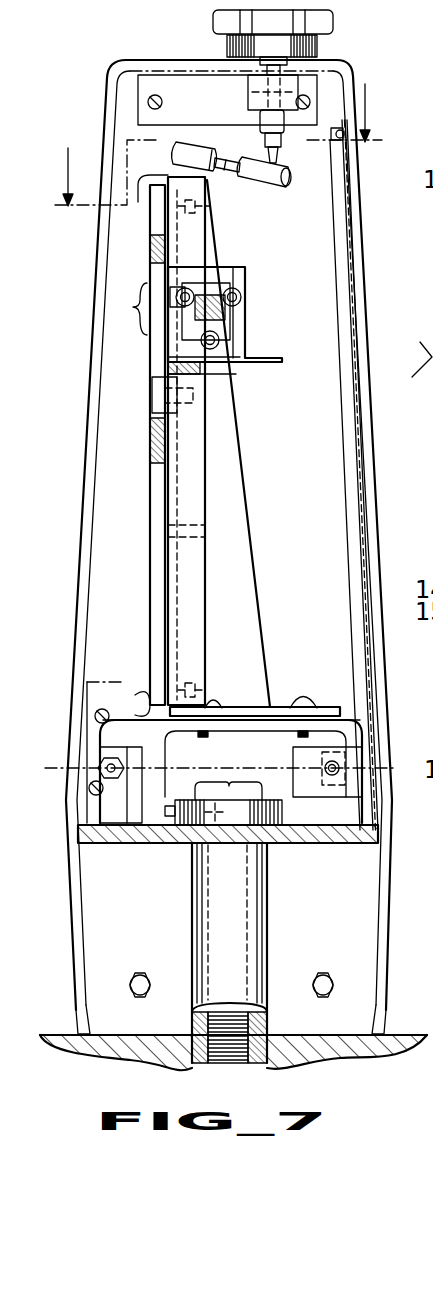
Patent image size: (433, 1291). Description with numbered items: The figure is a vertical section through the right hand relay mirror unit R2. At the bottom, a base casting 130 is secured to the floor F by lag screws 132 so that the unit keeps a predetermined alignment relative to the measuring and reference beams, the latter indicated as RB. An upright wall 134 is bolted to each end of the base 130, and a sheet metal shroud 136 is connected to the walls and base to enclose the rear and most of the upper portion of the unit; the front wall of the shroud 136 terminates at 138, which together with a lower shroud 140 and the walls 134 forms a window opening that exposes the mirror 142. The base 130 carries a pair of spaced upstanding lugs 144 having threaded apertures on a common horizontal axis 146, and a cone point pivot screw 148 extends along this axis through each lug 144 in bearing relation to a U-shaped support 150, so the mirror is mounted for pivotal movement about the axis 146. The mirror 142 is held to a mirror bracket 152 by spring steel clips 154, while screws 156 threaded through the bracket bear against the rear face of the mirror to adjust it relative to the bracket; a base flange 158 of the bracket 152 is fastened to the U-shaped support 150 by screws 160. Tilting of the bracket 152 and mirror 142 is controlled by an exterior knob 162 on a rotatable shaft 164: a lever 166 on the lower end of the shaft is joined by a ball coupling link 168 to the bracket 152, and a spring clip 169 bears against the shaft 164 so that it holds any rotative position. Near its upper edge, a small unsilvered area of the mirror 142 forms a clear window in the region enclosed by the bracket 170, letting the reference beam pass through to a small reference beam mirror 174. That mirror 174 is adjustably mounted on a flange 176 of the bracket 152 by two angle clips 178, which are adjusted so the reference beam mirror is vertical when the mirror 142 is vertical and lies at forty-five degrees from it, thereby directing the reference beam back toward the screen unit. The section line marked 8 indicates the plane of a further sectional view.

The relay mirror unit R2 is at (122, 60).
The exterior knob 162 is at (333, 23).
The front wall termination of shroud 138 is at (110, 202).
The sheet metal shroud 136 is at (350, 216).
The upright wall 134 is at (325, 541).
The section line 8- 8 is at (219, 145).
The rotatable shaft 164 is at (257, 92).
The spring clip 169 is at (250, 97).
The lever 166 is at (262, 153).
The ball coupling link 168 is at (275, 187).
The spring steel clips 154 is at (148, 200).
The mirror 142 is at (156, 598).
The mirror bracket 152 is at (233, 448).
The screws 156 is at (205, 206).
The angle clips 178 is at (225, 268).
The reference beam mirror 174 is at (222, 324).
The bracket 170 is at (133, 307).
The flange 176 is at (232, 373).
The direction arrow RB is at (414, 378).
The base flange 158 is at (342, 711).
The screws 160 is at (209, 708).
The U-shaped support 150 is at (330, 724).
The lower shroud 140 is at (87, 690).
The horizontal axis 146 is at (60, 767).
The cone point pivot screw 148 is at (103, 770).
The lag screws 132 is at (203, 784).
The upstanding lugs 144 is at (117, 818).
The base casting 130 is at (340, 924).
The floor F is at (398, 1033).